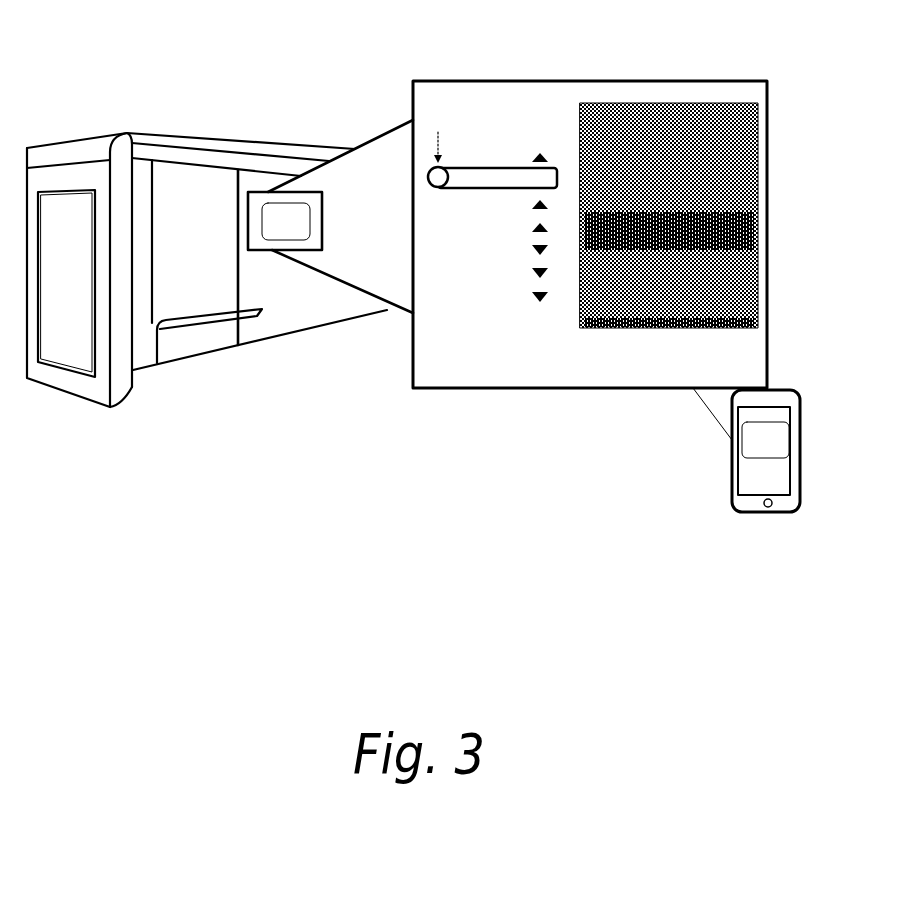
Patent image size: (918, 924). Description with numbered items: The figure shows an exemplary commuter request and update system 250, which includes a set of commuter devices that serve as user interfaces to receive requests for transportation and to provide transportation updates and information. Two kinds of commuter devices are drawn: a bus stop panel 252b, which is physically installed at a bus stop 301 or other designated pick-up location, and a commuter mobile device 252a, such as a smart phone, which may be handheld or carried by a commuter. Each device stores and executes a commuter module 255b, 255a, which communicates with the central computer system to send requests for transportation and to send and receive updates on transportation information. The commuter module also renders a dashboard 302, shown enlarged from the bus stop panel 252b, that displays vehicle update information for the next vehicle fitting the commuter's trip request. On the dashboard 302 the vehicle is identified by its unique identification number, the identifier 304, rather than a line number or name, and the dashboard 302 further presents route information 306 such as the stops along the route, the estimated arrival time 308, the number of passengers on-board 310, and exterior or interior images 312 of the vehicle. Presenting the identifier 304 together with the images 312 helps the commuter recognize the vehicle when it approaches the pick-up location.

The commuter request and update system 250 is at (389, 572).
The bus stop 301 is at (167, 131).
The bus stop panel 252b is at (261, 192).
The commuter module 255b is at (286, 221).
The dashboard 302 is at (663, 80).
The identifier 304 is at (538, 90).
The route information 306 is at (450, 243).
The estimated arrival time 308 is at (481, 387).
The number of passengers on-board 310 is at (588, 385).
The exterior/interior images 312 is at (677, 107).
The commuter mobile device 252a is at (730, 463).
The commuter module 255a is at (765, 440).